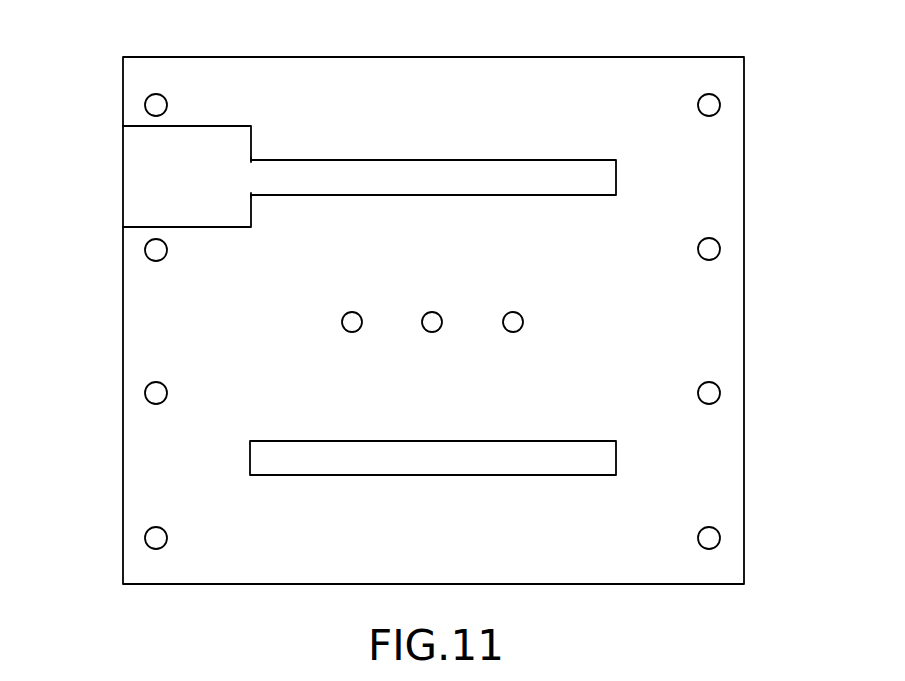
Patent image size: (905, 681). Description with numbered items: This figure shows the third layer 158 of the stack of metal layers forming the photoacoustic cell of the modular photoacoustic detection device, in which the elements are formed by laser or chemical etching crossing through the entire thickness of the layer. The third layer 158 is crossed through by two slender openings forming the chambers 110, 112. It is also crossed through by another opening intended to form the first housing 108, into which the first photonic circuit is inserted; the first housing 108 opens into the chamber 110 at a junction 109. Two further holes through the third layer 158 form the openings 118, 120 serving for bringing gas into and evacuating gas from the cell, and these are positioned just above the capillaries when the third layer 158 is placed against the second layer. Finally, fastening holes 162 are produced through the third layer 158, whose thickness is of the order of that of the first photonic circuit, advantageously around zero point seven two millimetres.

The first housing 108 is at (137, 175).
The opening between cutout and slot 109 is at (252, 177).
The chamber 110 is at (460, 175).
The chamber 112 is at (397, 455).
The gas input opening 118 is at (352, 322).
The gas output opening 120 is at (513, 322).
The third layer 158 is at (745, 97).
The fastening holes 162 is at (711, 249).